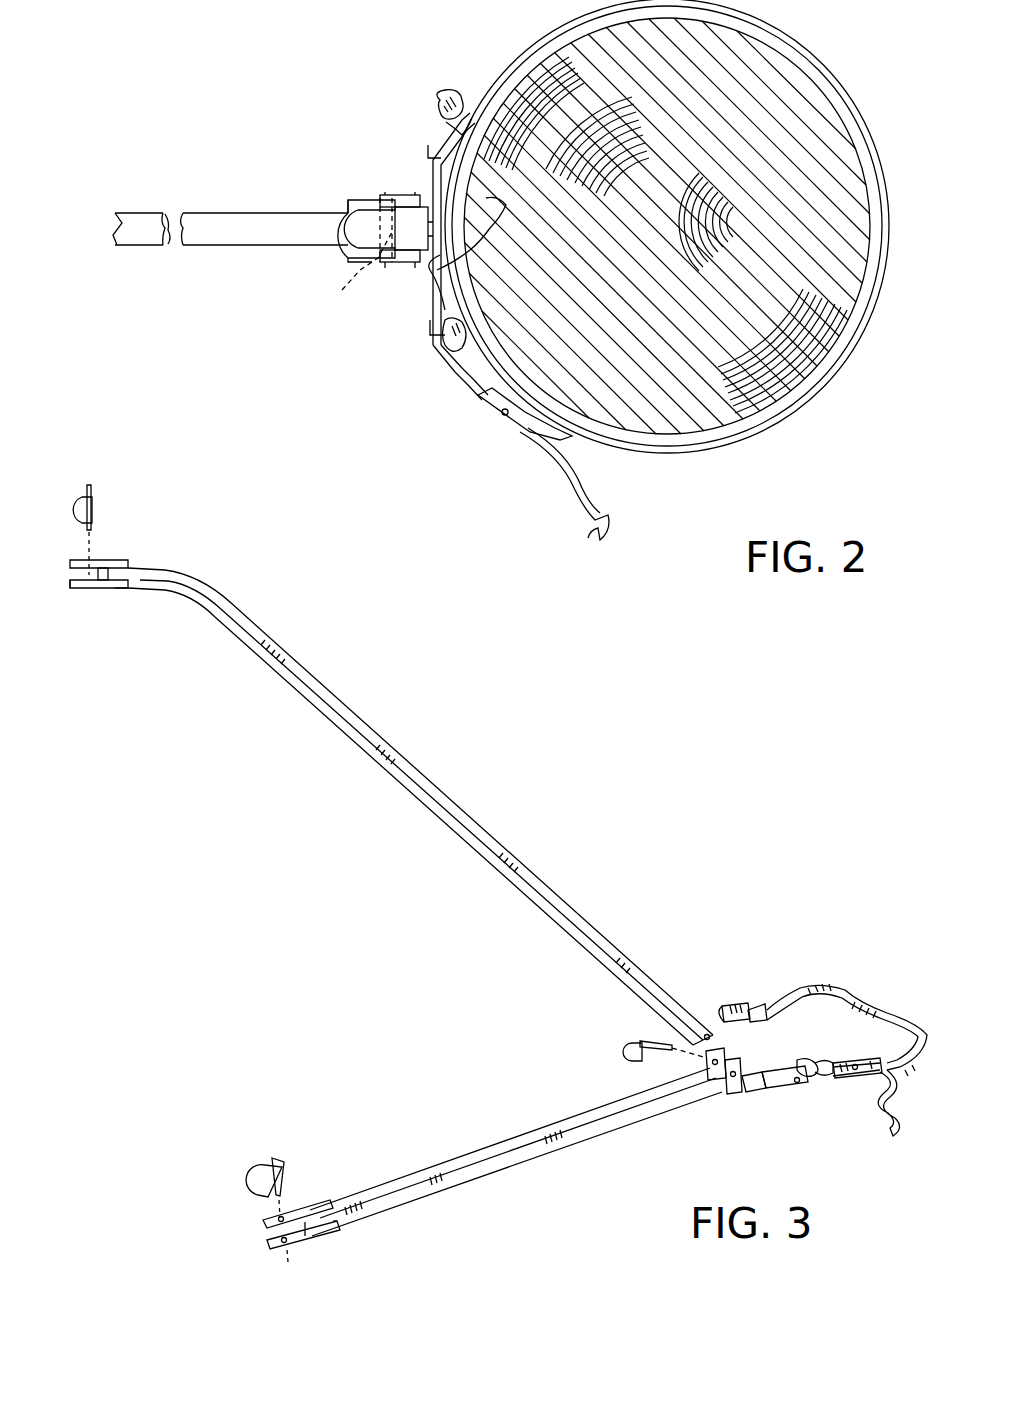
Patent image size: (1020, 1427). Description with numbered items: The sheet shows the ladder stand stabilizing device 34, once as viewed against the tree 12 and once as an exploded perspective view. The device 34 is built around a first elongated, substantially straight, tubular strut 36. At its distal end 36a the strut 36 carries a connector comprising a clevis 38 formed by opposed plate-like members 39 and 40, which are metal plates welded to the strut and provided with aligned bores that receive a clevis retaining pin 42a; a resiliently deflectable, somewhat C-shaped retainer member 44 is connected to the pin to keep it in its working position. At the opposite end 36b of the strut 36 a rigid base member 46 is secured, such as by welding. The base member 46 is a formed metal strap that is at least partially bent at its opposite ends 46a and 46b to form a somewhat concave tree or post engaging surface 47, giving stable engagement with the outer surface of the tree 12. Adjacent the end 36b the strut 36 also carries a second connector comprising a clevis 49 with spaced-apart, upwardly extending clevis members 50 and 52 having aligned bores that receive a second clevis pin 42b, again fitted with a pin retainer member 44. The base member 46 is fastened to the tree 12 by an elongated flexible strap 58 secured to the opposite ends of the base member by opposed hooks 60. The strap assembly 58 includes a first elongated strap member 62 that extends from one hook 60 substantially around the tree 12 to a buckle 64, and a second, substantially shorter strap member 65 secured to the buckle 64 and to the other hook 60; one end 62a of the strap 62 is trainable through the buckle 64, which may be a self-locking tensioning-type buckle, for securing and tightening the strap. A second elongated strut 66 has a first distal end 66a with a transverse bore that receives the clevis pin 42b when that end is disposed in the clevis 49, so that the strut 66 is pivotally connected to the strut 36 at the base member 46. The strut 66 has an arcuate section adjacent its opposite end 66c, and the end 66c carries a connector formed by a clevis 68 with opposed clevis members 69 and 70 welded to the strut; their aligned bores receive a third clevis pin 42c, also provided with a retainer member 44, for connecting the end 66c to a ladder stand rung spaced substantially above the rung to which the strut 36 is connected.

In FIG. 2, the tree 12 is at (555, 32).
In FIG. 3, the ladder stand stabilizing device 34 is at (452, 736).
In FIG. 2, the first elongated tubular strut 36 is at (140, 210).
In FIG. 3, the first elongated tubular strut 36 is at (505, 1180).
In FIG. 3, the distal end of strut 36a is at (310, 1245).
In FIG. 2, the opposite end of strut 36b is at (430, 262).
In FIG. 3, the opposite end of strut 36b is at (752, 1092).
In FIG. 3, the clevis 38 is at (343, 1238).
In FIG. 3, the clevis member 39 is at (312, 1203).
In FIG. 3, the clevis member 40 is at (300, 1245).
In FIG. 3, the clevis retaining pin 42a is at (280, 1165).
In FIG. 2, the second clevis pin 42b is at (342, 246).
In FIG. 3, the second clevis pin 42b is at (640, 1040).
In FIG. 3, the third clevis pin 42c is at (93, 510).
In FIG. 2, the retainer member 44 is at (348, 200).
In FIG. 3, the retainer member 44 is at (255, 1180).
In FIG. 2, the base member 46 is at (432, 146).
In FIG. 3, the base member 46 is at (790, 1090).
In FIG. 2, the end of base member 46a is at (430, 330).
In FIG. 2, the end of base member 46b is at (430, 134).
In FIG. 2, the tree or post engaging surface 47 is at (498, 230).
In FIG. 3, the clevis 49 is at (768, 1005).
In FIG. 2, the clevis member 50 is at (410, 192).
In FIG. 3, the clevis member 50 is at (706, 1066).
In FIG. 2, the clevis member 52 is at (405, 262).
In FIG. 3, the clevis member 52 is at (730, 1094).
In FIG. 2, the flexible strap 58 is at (722, 452).
In FIG. 3, the flexible strap 58 is at (847, 985).
In FIG. 2, the hook 60 is at (438, 106).
In FIG. 3, the hook 60 is at (718, 1008).
In FIG. 2, the first strap member 62 is at (798, 398).
In FIG. 3, the first strap member 62 is at (865, 1010).
In FIG. 2, the end of strap 62a is at (602, 530).
In FIG. 2, the buckle 64 is at (515, 432).
In FIG. 3, the buckle 64 is at (858, 1065).
In FIG. 2, the second strap member 65 is at (480, 398).
In FIG. 2, the second elongated strut 66 is at (237, 248).
In FIG. 3, the second elongated strut 66 is at (200, 588).
In FIG. 3, the first distal end of strut 66a is at (745, 1002).
In FIG. 3, the opposite end of strut 66c is at (120, 590).
In FIG. 3, the clevis 68 is at (128, 560).
In FIG. 3, the clevis member 69 is at (82, 560).
In FIG. 3, the clevis member 70 is at (86, 590).